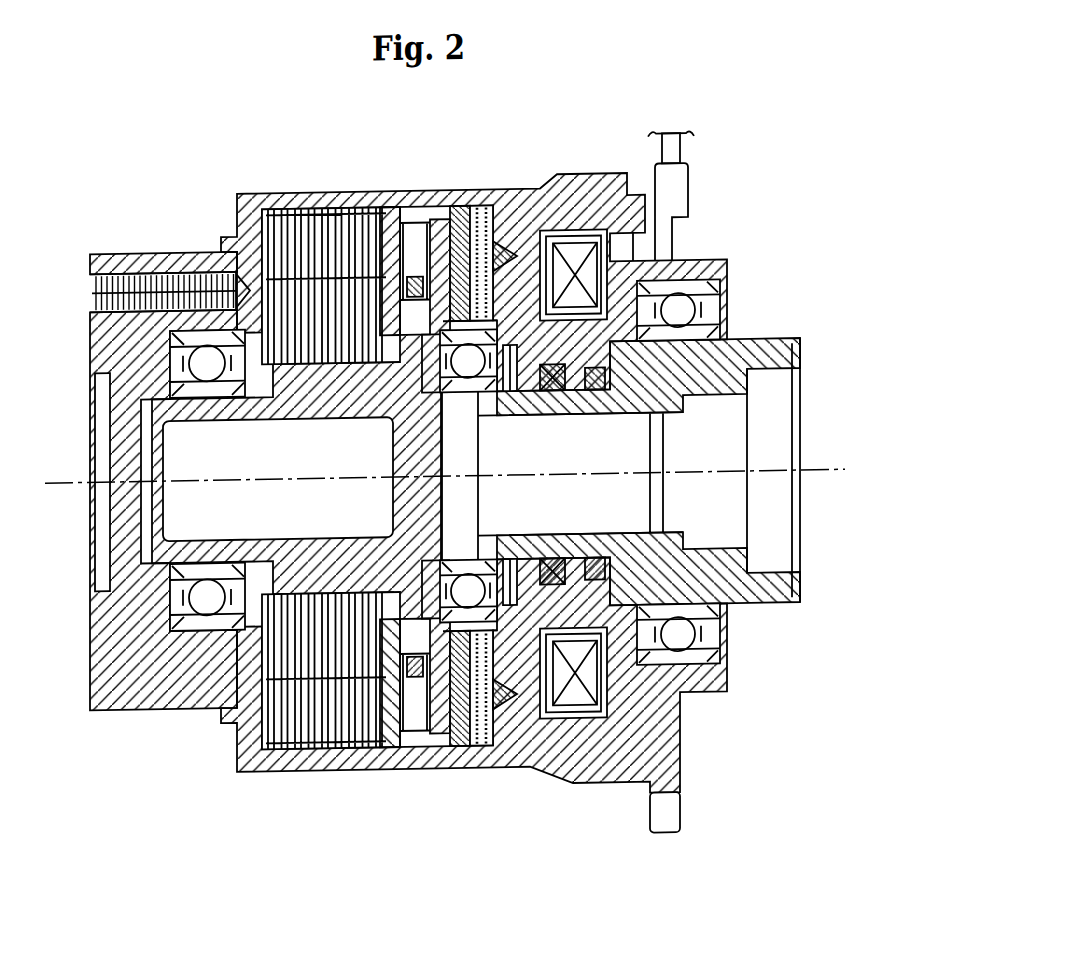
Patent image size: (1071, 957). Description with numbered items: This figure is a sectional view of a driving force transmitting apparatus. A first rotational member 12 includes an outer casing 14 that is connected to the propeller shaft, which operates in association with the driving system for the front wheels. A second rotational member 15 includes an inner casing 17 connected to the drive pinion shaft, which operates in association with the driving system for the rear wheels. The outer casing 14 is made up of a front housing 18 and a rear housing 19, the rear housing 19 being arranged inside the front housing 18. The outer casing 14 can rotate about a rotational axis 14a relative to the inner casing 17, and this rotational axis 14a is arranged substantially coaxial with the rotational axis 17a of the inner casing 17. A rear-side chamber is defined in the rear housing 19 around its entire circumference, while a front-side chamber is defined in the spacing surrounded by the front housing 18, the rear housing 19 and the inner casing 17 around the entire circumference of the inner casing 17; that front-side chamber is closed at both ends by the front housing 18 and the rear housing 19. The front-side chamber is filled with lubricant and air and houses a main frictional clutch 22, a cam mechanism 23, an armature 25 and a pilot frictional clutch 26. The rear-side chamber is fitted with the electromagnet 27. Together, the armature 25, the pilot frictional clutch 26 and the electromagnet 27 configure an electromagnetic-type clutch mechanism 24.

The first rotational member 12 is at (170, 241).
The outer casing 14 is at (141, 246).
The rotational axis 14a is at (210, 477).
The second rotational member 15 is at (805, 439).
The inner casing 17 is at (706, 379).
The rotational axis 17a is at (517, 479).
The front housing 18 is at (253, 187).
The rear housing 19 is at (652, 211).
The main frictional clutch 22 is at (329, 207).
The cam mechanism 23 is at (393, 207).
The electromagnetic-type clutch mechanism 24 is at (629, 137).
The armature 25 is at (457, 207).
The pilot frictional clutch 26 is at (486, 207).
The electromagnet 27 is at (578, 260).